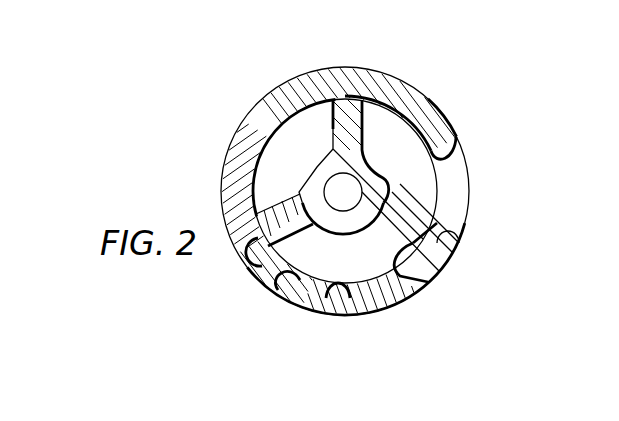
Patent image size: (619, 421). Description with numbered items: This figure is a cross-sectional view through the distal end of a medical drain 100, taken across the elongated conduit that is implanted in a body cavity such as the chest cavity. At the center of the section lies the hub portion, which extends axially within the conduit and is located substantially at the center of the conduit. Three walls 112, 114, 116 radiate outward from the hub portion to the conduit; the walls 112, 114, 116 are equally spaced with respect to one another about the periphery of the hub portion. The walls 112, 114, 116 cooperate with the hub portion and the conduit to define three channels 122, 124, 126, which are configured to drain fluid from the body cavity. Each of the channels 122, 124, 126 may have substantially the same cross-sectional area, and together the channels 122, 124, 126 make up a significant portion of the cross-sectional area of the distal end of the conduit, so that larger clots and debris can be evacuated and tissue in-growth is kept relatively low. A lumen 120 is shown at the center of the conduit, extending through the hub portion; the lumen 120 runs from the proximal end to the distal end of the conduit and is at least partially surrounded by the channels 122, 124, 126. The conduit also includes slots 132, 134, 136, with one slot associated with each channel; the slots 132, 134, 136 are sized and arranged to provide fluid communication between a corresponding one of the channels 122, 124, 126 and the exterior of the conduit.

The drain 100 is at (500, 72).
The wall 112 is at (348, 134).
The wall 114 is at (283, 218).
The wall 116 is at (424, 281).
The lumen 120 is at (336, 192).
The channel 122 is at (422, 206).
The channel 124 is at (309, 137).
The channel 126 is at (316, 266).
The slot 132 is at (464, 158).
The slot 134 is at (263, 104).
The slot 136 is at (276, 282).